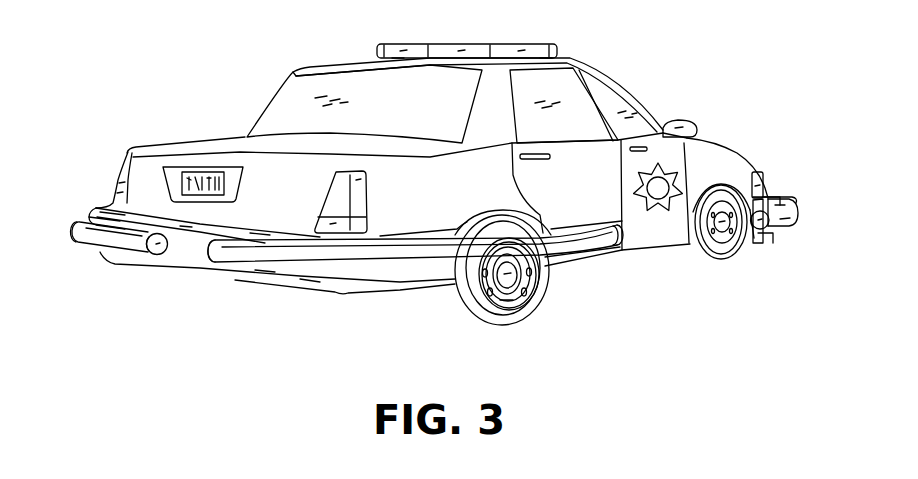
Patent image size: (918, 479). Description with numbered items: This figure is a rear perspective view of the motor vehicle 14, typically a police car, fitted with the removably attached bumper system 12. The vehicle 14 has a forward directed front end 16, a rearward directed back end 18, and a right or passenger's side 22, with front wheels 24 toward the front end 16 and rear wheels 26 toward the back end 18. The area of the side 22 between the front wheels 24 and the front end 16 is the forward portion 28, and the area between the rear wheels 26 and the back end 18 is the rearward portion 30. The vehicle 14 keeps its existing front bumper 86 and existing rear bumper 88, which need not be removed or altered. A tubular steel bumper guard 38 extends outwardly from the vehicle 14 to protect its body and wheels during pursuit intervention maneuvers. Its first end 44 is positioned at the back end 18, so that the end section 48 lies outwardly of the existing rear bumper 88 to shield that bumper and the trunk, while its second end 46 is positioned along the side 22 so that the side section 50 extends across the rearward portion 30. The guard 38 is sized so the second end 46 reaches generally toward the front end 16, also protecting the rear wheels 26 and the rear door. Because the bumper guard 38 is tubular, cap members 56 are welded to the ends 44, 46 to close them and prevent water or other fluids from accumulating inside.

The bumper system 12 is at (441, 278).
The motor vehicle 14 is at (656, 82).
The front end 16 is at (779, 163).
The back end 18 is at (111, 138).
The second side 22 is at (645, 290).
The front wheels 24 is at (721, 260).
The rear wheels 26 is at (514, 313).
The forward portion 28 is at (727, 165).
The rearward portion 30 is at (413, 218).
The bumper guard 38 is at (461, 266).
The first end 44 is at (138, 240).
The second end 46 is at (612, 240).
The end section 48 is at (262, 262).
The side section 50 is at (490, 250).
The cap member 56 is at (163, 248).
The existing front bumper 86 is at (780, 201).
The existing rear bumper 88 is at (104, 212).